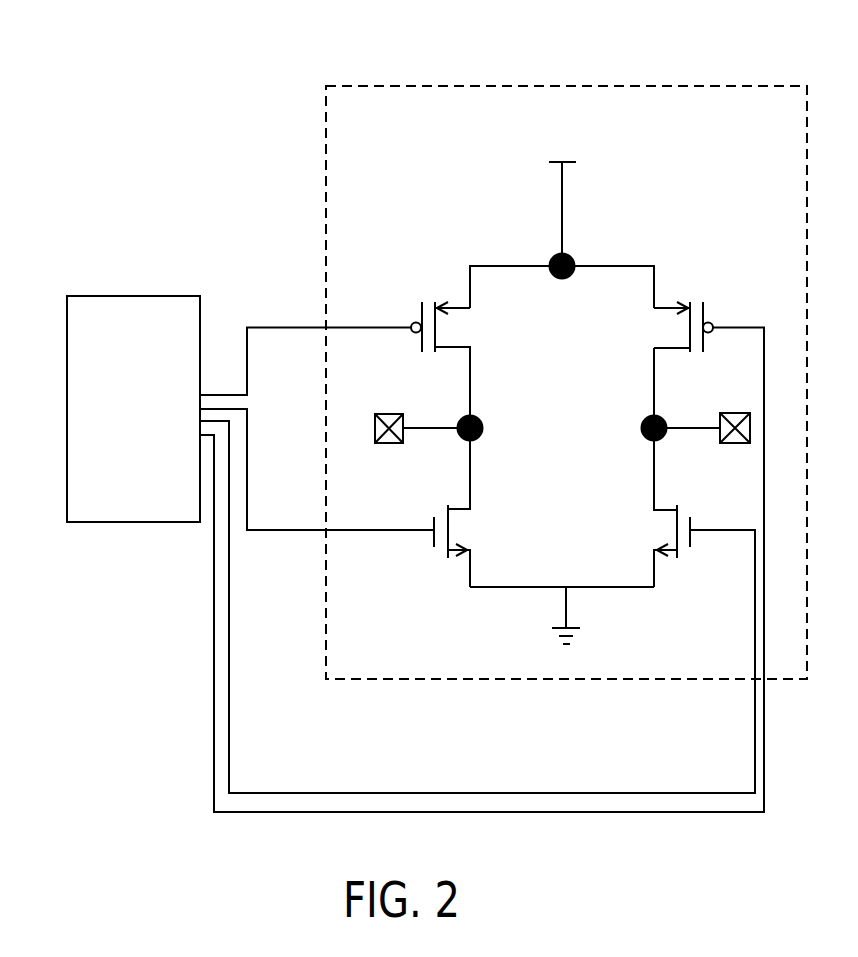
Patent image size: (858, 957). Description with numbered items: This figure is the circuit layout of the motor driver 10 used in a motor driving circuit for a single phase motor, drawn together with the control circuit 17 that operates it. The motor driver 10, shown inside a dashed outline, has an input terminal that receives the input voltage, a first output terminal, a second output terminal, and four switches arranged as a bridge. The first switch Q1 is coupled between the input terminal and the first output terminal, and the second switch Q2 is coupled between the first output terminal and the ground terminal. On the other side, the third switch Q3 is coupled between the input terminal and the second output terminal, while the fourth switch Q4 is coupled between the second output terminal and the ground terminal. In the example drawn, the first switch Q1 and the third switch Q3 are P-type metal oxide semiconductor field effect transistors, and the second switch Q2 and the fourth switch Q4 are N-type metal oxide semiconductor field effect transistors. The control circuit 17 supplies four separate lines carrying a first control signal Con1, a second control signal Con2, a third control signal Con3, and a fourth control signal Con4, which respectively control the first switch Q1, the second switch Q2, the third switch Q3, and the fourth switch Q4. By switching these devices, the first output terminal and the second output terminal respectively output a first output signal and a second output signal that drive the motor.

The motor driver 10 is at (566, 84).
The control circuit 17 is at (133, 294).
The first switch Q1 is at (457, 359).
The second switch Q2 is at (469, 513).
The third switch Q3 is at (665, 359).
The fourth switch Q4 is at (653, 513).
The first control signal Con1 is at (277, 325).
The second control signal Con2 is at (284, 528).
The third control signal Con3 is at (268, 814).
The fourth control signal Con4 is at (268, 791).